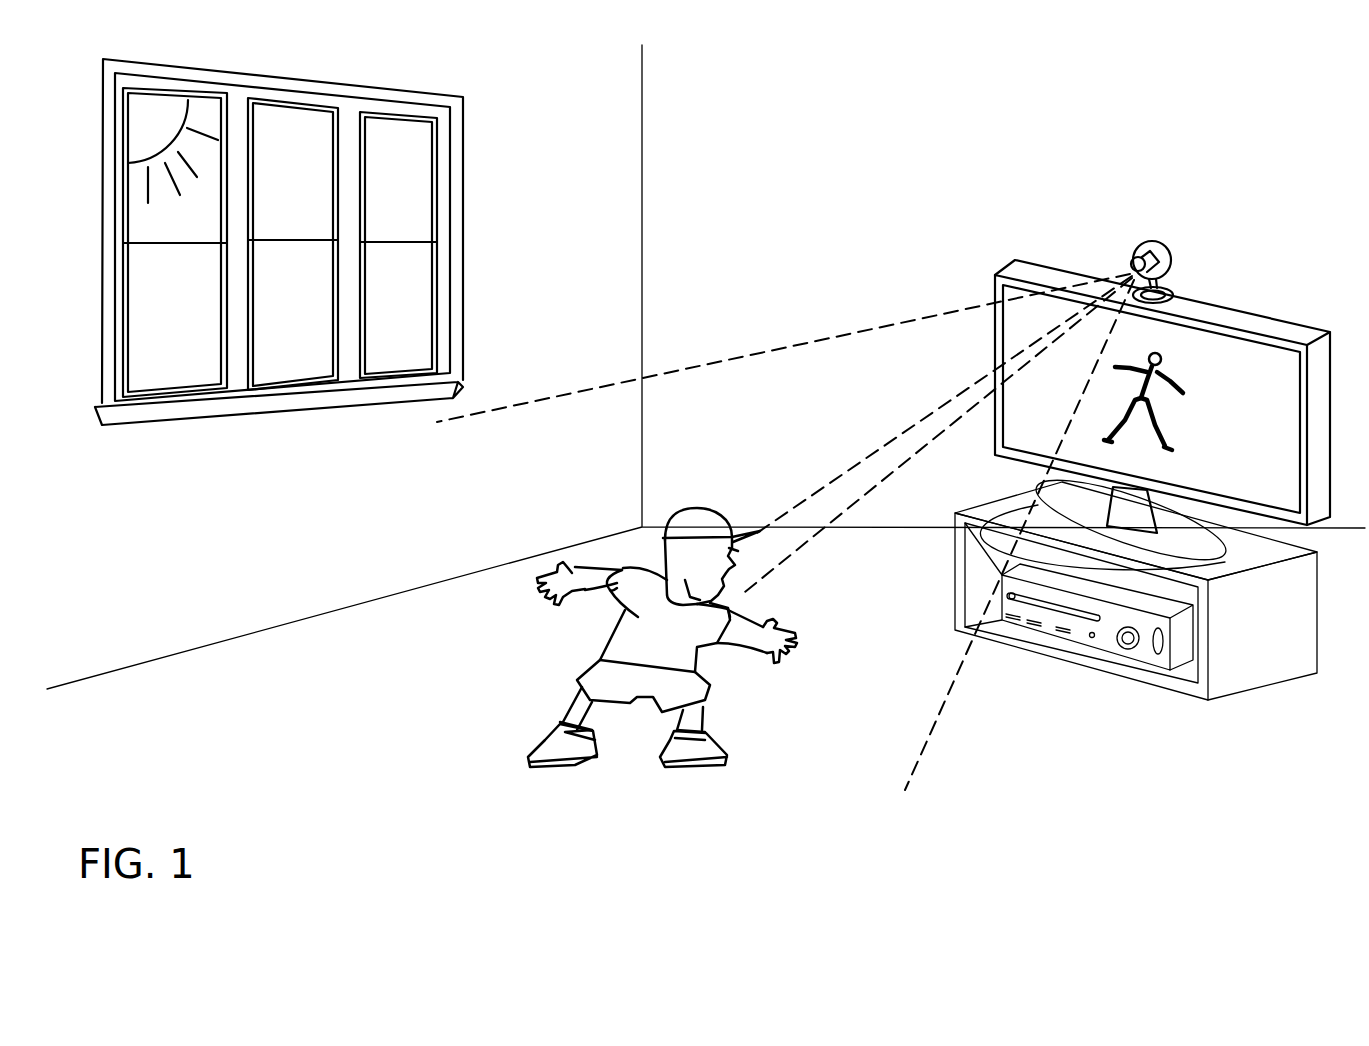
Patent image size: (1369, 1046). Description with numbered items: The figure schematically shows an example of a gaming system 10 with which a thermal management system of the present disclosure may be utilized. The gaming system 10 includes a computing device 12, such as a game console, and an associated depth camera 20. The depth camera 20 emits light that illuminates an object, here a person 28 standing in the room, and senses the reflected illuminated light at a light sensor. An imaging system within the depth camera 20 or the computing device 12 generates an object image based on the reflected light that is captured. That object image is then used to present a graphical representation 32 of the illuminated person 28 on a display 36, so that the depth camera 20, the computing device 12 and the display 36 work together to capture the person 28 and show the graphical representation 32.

The gaming system 10 is at (1004, 184).
The computing device 12 is at (1103, 650).
The depth camera 20 is at (1170, 242).
The person 28 is at (663, 664).
The graphical representation 32 is at (1163, 355).
The display 36 is at (1297, 377).